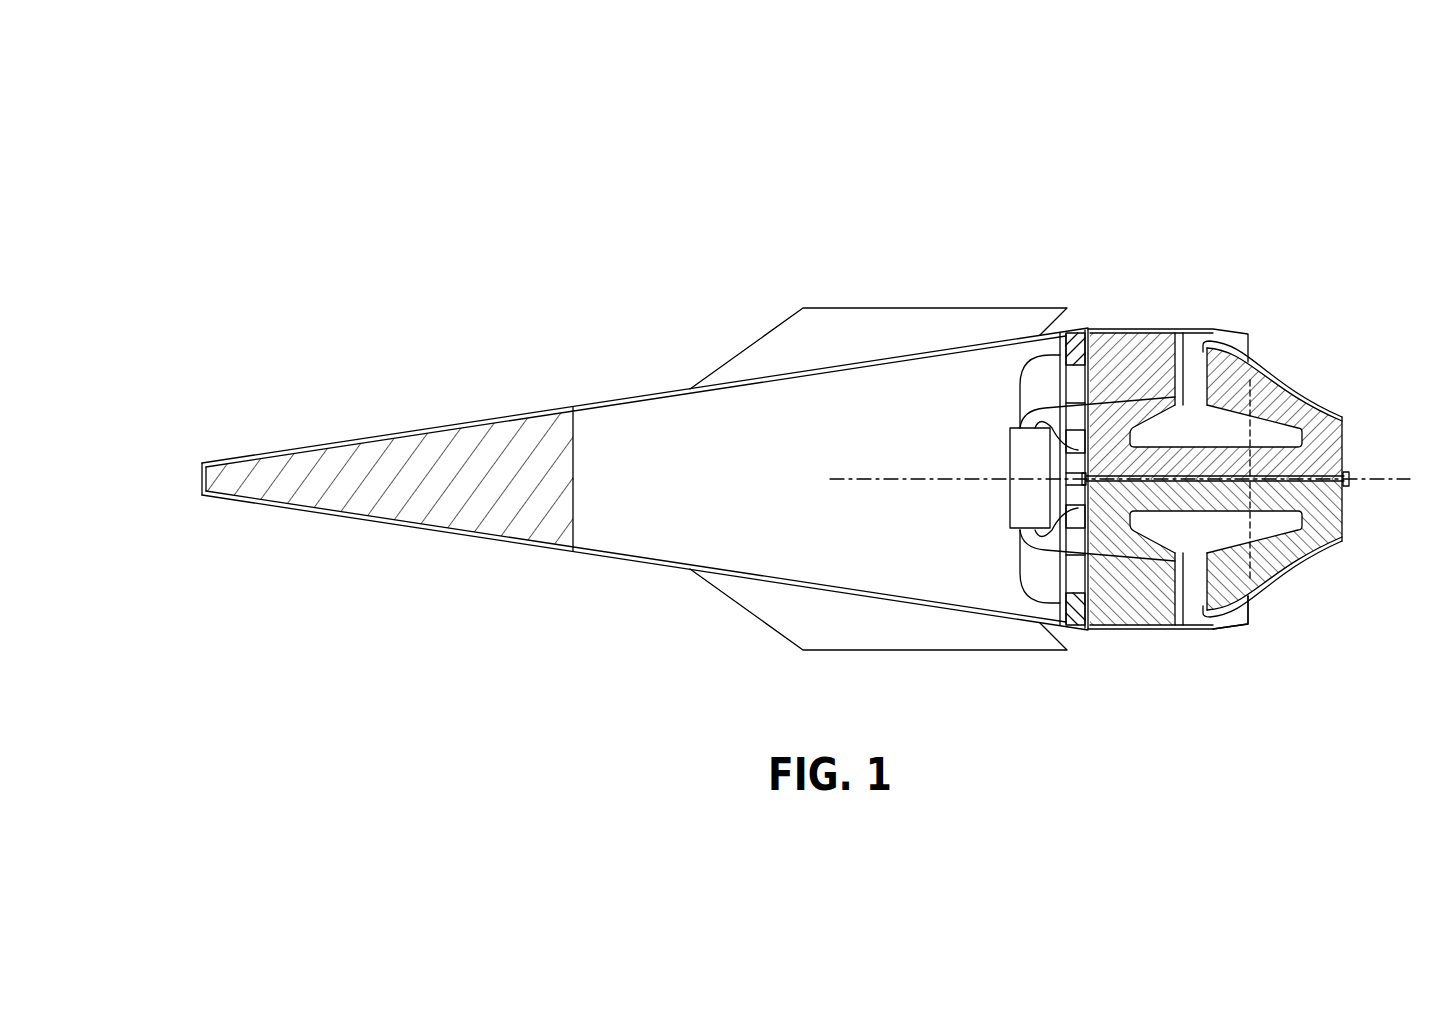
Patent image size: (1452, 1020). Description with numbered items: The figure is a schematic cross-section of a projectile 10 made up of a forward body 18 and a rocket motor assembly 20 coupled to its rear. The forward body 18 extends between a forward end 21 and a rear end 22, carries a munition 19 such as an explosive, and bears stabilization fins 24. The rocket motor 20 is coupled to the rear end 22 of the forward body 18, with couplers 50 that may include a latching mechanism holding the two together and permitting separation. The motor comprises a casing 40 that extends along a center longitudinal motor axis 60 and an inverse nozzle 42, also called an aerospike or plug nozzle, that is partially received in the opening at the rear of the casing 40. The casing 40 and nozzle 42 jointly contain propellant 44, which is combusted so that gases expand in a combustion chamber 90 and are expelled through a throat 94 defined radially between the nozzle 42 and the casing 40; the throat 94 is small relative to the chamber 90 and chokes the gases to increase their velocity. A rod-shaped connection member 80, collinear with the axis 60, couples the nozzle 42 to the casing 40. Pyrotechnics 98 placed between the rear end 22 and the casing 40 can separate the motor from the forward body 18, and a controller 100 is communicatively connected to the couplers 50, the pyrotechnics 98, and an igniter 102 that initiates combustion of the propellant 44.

The projectile 10 is at (788, 440).
The forward body 18 is at (645, 376).
The munition 19 is at (487, 443).
The rocket motor assembly 20 is at (1126, 477).
The forward end 21 is at (210, 430).
The rear end 22 is at (884, 539).
The stabilization fins 24 is at (867, 652).
The casing 40 is at (1149, 330).
The inverse nozzle 42 is at (1313, 402).
The propellant 44 is at (1323, 433).
The couplers 50 is at (1077, 352).
The center longitudinal motor axis 60 is at (1393, 482).
The connection member 80 is at (1330, 474).
The combustion chamber 90 is at (1206, 537).
The throat 94 is at (1270, 612).
The pyrotechnics 98 is at (1077, 450).
The controller 100 is at (1009, 492).
The igniter 102 is at (1186, 355).